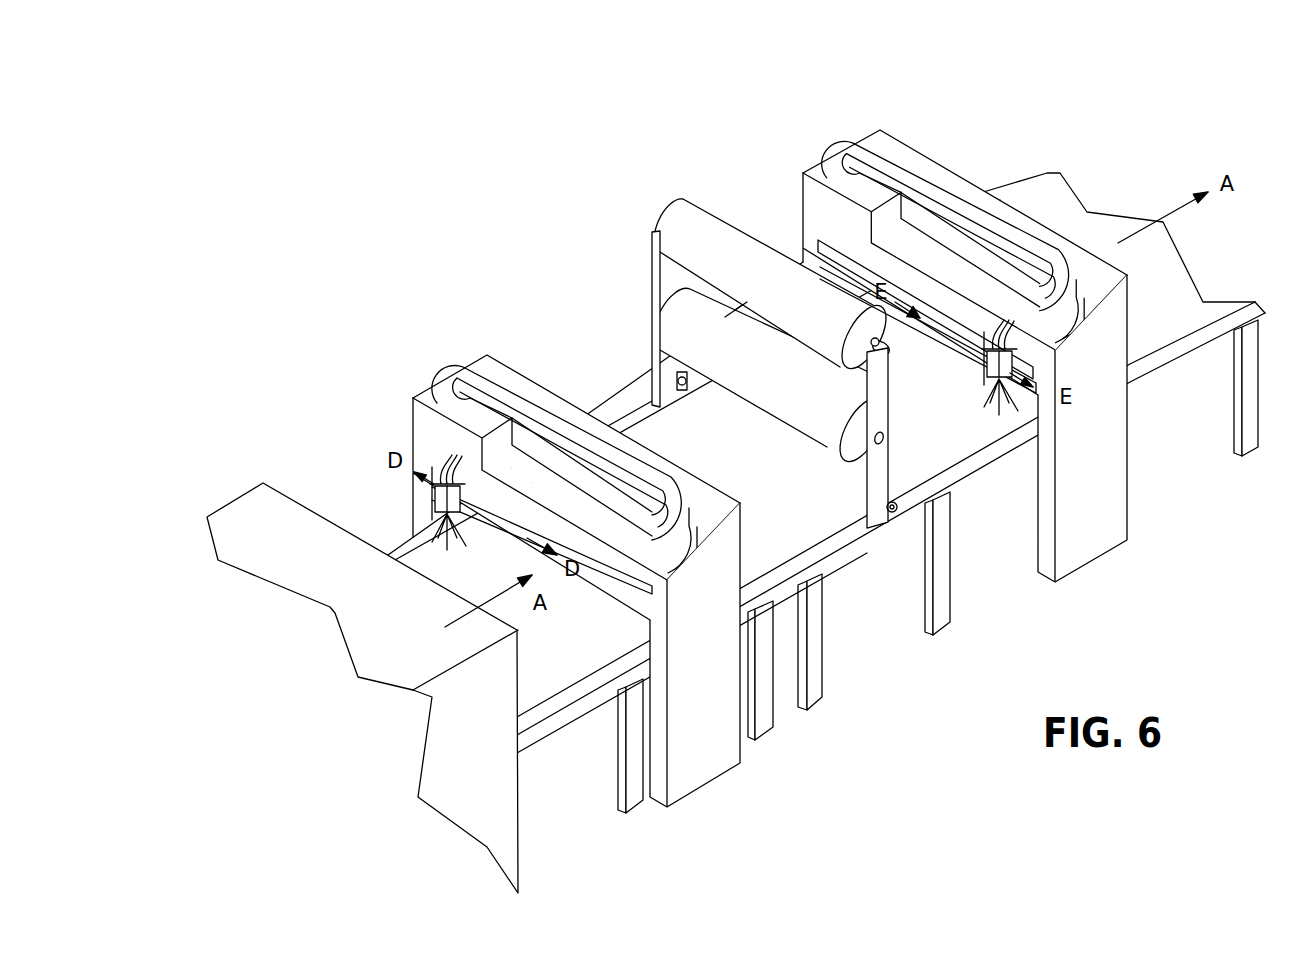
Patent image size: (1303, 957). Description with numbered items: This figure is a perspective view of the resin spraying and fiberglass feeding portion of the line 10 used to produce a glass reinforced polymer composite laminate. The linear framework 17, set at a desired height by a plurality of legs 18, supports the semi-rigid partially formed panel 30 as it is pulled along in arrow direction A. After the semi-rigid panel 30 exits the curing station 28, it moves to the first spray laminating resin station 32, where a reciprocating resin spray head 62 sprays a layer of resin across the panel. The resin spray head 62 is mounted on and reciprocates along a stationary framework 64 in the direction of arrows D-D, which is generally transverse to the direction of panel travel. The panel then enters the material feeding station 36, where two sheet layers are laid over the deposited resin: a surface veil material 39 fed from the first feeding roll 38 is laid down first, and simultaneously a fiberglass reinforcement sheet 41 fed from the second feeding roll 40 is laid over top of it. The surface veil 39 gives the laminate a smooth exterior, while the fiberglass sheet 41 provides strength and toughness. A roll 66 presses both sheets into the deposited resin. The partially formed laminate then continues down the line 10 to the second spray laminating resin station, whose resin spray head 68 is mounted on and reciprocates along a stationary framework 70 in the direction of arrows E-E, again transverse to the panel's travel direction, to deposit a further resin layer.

The line 10 is at (1010, 103).
The linear framework 17 is at (1163, 375).
The legs 18 is at (807, 698).
The curing station 28 is at (226, 493).
The semi-rigid panel 30 is at (538, 683).
The spray laminating resin station 32 is at (556, 574).
The material feeding station 36 is at (746, 428).
The first feeding roll 38 is at (675, 326).
The surface veil material 39 is at (828, 327).
The second feeding roll 40 is at (718, 222).
The fiberglass reinforcement sheet 41 is at (866, 502).
The resin spray head 62 is at (436, 494).
The framework 64 is at (707, 770).
The roll 66 is at (893, 512).
The resin spray head 68 is at (1007, 385).
The framework 70 is at (1073, 538).